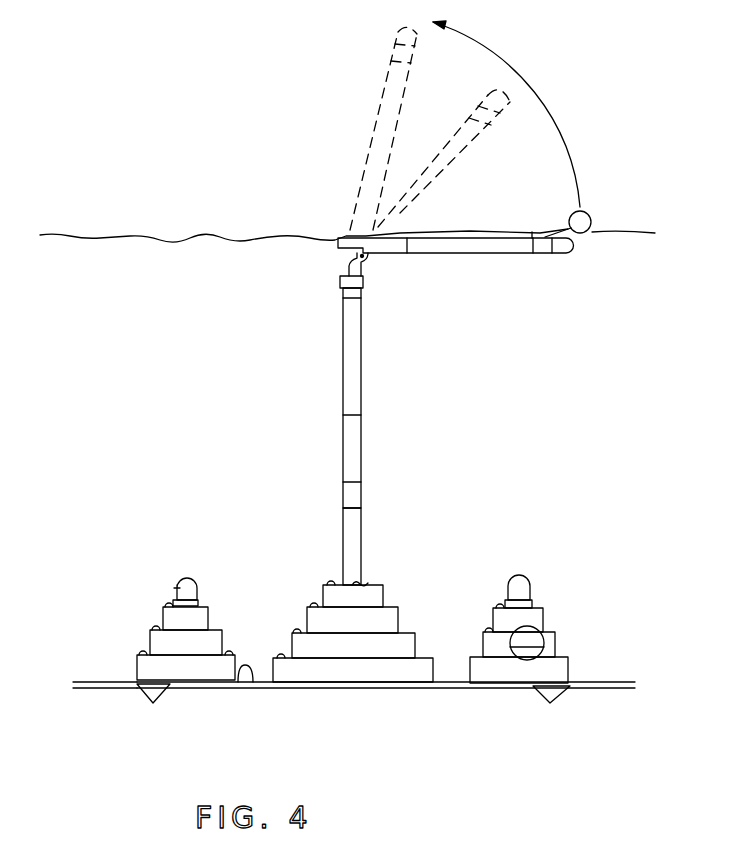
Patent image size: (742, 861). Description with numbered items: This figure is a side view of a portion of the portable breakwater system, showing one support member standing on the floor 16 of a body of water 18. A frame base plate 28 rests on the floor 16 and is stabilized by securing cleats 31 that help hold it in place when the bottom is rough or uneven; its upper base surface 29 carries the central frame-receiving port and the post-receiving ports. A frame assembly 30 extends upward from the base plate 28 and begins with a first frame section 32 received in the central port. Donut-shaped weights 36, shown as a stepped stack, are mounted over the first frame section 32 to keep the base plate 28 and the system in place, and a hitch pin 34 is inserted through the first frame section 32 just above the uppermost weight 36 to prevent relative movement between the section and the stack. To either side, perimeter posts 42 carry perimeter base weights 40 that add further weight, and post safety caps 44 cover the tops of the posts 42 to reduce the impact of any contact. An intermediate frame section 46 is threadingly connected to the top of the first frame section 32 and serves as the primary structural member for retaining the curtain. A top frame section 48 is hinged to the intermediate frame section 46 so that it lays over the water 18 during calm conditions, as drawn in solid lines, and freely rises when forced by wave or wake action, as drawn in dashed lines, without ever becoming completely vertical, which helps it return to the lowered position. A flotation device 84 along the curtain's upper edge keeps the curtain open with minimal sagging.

The floor 16 is at (462, 692).
The body of water 18 is at (642, 237).
The frame base plate 28 is at (117, 682).
The upper base surface 29 is at (238, 685).
The frame assembly 30 is at (420, 421).
The securing cleat 31 is at (142, 693).
The first frame section 32 is at (358, 543).
The hitch pin 34 is at (358, 583).
The weights 36 is at (268, 652).
The perimeter base weights 40 is at (132, 663).
The perimeter posts 42 is at (173, 598).
The post safety cap 44 is at (185, 578).
The intermediate frame section 46 is at (355, 333).
The top frame section 48 is at (370, 130).
The flotation device 84 is at (588, 231).